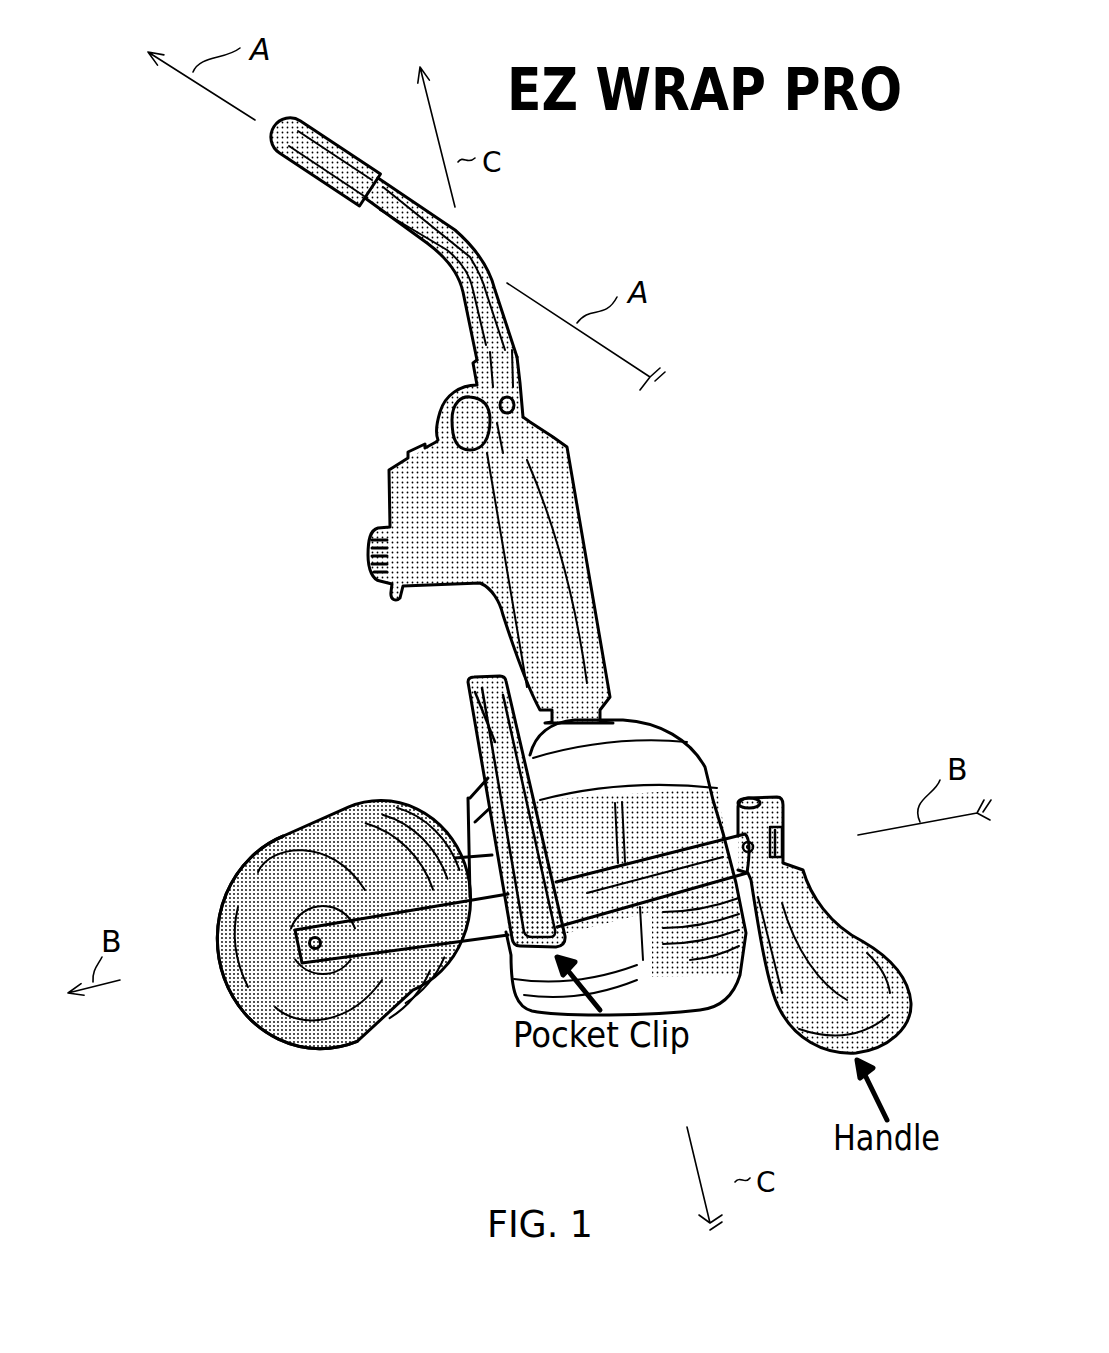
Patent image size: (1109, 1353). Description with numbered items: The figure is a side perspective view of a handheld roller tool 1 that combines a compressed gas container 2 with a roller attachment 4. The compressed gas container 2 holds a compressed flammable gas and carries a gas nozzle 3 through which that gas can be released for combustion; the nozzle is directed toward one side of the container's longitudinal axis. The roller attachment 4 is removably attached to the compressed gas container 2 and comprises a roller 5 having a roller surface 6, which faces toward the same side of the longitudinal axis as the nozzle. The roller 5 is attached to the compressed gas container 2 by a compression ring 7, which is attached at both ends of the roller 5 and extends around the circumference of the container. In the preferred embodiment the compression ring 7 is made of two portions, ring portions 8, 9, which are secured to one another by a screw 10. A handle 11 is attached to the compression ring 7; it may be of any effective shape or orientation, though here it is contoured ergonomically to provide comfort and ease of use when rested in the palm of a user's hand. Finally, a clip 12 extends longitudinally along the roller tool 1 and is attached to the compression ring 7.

The roller tool 1 is at (710, 323).
The compressed gas container 2 is at (690, 747).
The gas nozzle 3 is at (413, 713).
The roller attachment 4 is at (277, 1047).
The roller 5 is at (268, 957).
The roller surface 6 is at (313, 820).
The compression ring 7 is at (477, 920).
The ring portion 8 is at (730, 862).
The ring portion 9 is at (723, 823).
The screw 10 is at (753, 843).
The handle 11 is at (873, 977).
The clip 12 is at (487, 718).